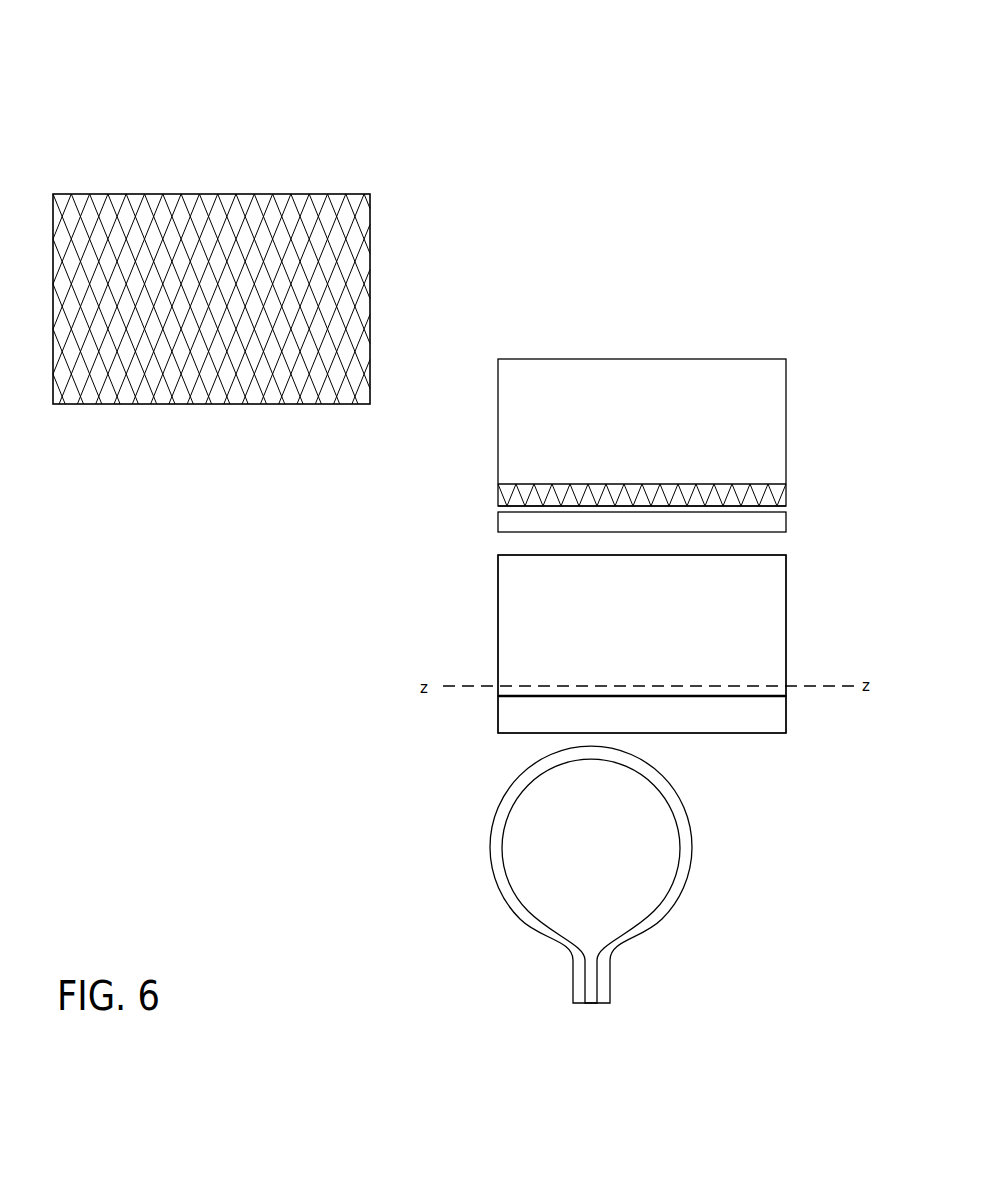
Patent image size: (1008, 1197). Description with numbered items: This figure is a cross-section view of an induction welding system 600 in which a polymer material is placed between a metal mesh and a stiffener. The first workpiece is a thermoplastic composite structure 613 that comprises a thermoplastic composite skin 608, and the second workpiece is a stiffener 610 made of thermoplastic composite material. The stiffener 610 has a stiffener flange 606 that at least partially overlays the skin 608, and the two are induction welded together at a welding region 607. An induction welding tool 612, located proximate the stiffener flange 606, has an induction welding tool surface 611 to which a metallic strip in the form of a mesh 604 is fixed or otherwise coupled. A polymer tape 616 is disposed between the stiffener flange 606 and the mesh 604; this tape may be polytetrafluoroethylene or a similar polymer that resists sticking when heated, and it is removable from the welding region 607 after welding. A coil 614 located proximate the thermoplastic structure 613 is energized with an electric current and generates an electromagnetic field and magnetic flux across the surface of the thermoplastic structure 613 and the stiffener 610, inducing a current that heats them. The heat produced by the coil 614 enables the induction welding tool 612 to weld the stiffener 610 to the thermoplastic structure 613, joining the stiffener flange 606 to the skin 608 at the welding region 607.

The sensing assembly 600 is at (577, 163).
The mesh 604 is at (141, 194).
The stiffener flange 606 is at (508, 663).
The welding region 607 is at (786, 697).
The thermoplastic composite skin 608 is at (707, 722).
The stiffener 610 is at (498, 602).
The induction welding tool surface 611 is at (786, 484).
The induction welding tool 612 is at (498, 359).
The thermoplastic composite structure 613 is at (498, 715).
The coil 614 is at (520, 917).
The polymer tape 616 is at (786, 531).